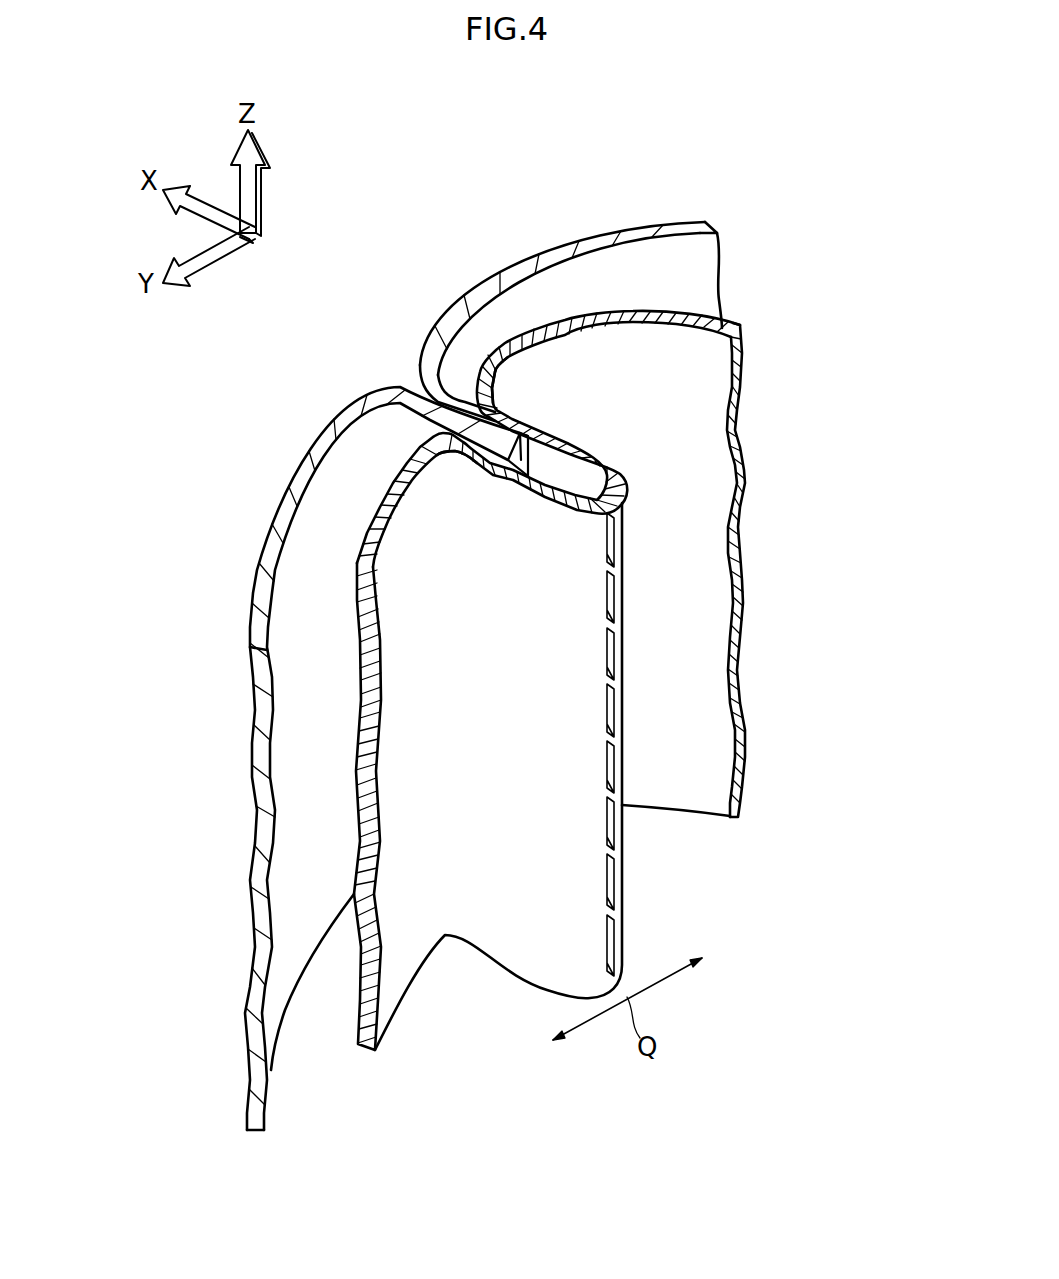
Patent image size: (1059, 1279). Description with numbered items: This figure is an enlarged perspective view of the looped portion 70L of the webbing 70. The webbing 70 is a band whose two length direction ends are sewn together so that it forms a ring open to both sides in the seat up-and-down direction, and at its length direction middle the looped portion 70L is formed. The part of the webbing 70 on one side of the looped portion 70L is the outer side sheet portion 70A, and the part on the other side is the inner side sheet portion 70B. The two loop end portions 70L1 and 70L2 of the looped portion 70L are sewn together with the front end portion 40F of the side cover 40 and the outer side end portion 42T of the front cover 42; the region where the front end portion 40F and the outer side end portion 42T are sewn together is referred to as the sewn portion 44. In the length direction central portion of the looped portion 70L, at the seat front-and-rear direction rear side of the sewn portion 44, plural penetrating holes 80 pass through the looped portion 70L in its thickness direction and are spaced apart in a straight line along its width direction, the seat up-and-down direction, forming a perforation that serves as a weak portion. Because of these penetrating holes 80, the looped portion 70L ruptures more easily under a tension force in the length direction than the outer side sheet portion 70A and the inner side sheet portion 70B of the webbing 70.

The side cover 40 is at (351, 758).
The front end portion of the side cover 40F is at (488, 452).
The front cover 42 is at (514, 299).
The outer side end portion of the front cover 42T is at (530, 448).
The sewn portion 44 is at (384, 354).
The webbing 70 is at (549, 706).
The outer side sheet portion 70A is at (395, 968).
The inner side sheet portion 70B is at (700, 780).
The looped portion 70L is at (590, 439).
The loop end portion 70L1 is at (463, 457).
The loop end portion 70L2 is at (500, 393).
The penetrating holes 80 is at (606, 650).